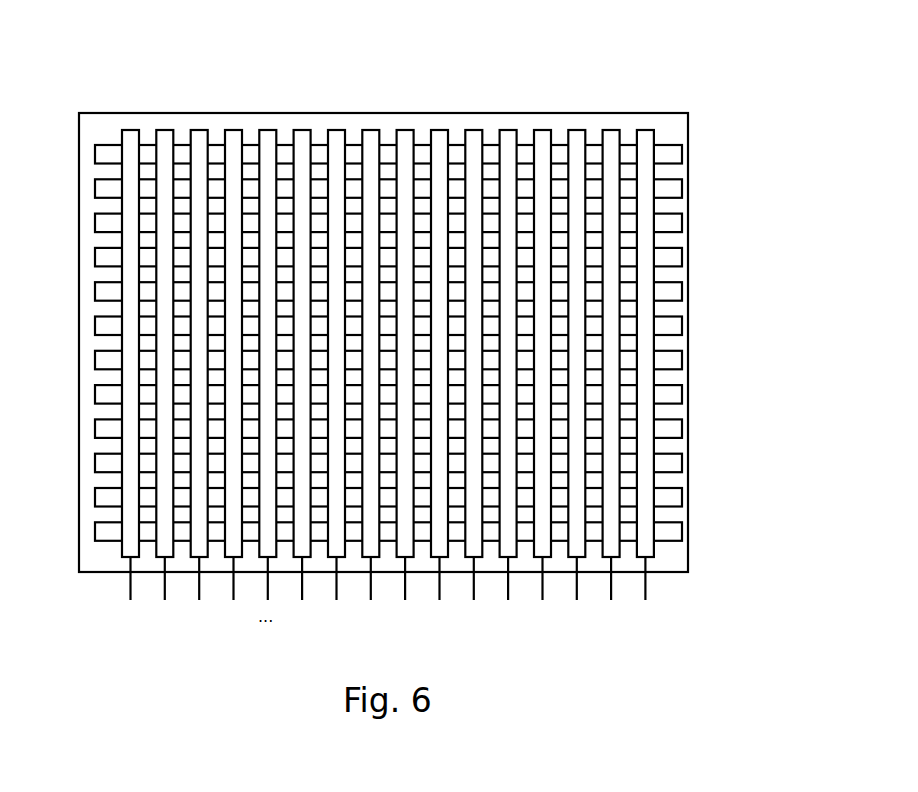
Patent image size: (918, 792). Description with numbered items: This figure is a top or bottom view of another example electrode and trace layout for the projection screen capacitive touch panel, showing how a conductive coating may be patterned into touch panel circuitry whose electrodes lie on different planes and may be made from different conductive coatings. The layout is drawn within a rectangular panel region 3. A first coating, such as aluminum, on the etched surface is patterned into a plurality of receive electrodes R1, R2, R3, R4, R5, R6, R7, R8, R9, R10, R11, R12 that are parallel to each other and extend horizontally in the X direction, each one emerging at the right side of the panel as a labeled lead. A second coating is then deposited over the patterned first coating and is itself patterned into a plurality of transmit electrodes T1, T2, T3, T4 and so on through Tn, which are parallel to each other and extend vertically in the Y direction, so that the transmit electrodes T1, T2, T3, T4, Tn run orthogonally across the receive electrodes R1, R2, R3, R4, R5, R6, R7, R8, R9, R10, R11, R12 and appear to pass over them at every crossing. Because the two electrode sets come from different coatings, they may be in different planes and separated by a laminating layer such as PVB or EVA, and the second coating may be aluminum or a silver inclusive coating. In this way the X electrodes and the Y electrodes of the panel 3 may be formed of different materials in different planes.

The capacitive sensor electrode panel 3 is at (672, 122).
The receive electrode R1 is at (682, 154).
The receive electrode R2 is at (682, 189).
The receive electrode R3 is at (682, 223).
The receive electrode R4 is at (682, 257).
The receive electrode R5 is at (682, 291).
The receive electrode R6 is at (682, 360).
The receive electrode R7 is at (682, 326).
The receive electrode R8 is at (682, 394).
The receive electrode R9 is at (682, 429).
The receive electrode R10 is at (682, 463).
The receive electrode R11 is at (682, 497).
The receive electrode R12 is at (682, 532).
The transmit electrode T1 is at (130, 382).
The transmit electrode T2 is at (164, 382).
The transmit electrode T3 is at (199, 382).
The transmit electrode T4 is at (233, 382).
The transmit electrode Tn is at (645, 382).